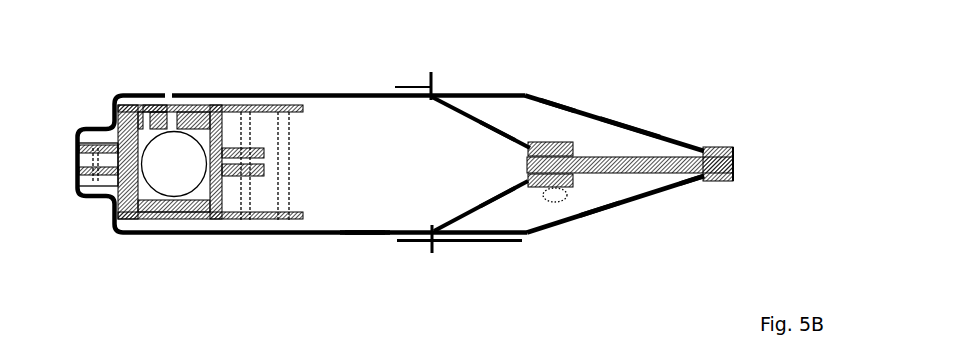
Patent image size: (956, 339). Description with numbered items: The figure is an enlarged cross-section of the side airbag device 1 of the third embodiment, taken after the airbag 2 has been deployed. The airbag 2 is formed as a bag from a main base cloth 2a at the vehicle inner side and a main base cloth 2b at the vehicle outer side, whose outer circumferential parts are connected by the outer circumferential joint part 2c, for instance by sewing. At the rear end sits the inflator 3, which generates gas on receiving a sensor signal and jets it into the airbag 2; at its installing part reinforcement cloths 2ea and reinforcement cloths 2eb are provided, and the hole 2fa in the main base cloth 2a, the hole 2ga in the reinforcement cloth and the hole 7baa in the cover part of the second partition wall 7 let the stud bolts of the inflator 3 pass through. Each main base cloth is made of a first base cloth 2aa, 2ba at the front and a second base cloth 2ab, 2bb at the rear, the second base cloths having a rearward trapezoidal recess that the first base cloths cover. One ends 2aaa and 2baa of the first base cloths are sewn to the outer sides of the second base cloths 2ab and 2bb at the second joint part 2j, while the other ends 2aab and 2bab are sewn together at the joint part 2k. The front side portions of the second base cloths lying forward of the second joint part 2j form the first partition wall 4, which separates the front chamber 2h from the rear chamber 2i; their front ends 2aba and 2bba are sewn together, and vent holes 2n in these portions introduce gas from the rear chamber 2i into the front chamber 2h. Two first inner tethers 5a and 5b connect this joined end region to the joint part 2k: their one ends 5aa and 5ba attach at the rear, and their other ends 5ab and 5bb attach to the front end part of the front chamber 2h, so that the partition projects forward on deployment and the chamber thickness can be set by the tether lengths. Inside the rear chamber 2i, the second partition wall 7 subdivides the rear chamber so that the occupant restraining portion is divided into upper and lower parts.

The side airbag device 1 is at (673, 98).
The airbag 2 is at (431, 158).
The main base cloth 2a is at (296, 93).
The first base cloth 2aa is at (583, 106).
The one end of first base cloth 2aaa is at (397, 86).
The other end of first base cloth 2aab is at (733, 148).
The second base cloth 2ab is at (383, 100).
The front side end of second base cloth 2aba is at (574, 142).
The main base cloth 2b is at (250, 236).
The first base cloth 2ba is at (577, 226).
The one end of first base cloth 2baa is at (404, 243).
The other end of first base cloth 2bab is at (714, 184).
The second base cloth 2bb is at (387, 230).
The front side end of second base cloth 2bba is at (593, 220).
The outer circumferential joint part 2c is at (103, 205).
The reinforcement cloth 2ea is at (265, 151).
The reinforcement cloth 2eb is at (265, 171).
The hole 2fa is at (167, 92).
The hole 2ga is at (172, 112).
The front chamber 2h is at (556, 115).
The rear chamber 2i is at (365, 202).
The second joint part 2j is at (436, 88).
The joint part 2k is at (724, 145).
The vent hole 2n is at (538, 203).
The inflator 3 is at (176, 172).
The first partition wall 4 is at (610, 174).
The first inner tether 5a is at (638, 156).
The one end of first inner tether 5aa is at (500, 135).
The other end of first inner tether 5ab is at (733, 163).
The first inner tether 5b is at (645, 176).
The one end of first inner tether 5ba is at (500, 244).
The other end of first inner tether 5bb is at (733, 176).
The second partition wall 7 is at (300, 114).
The hole 7baa is at (148, 103).